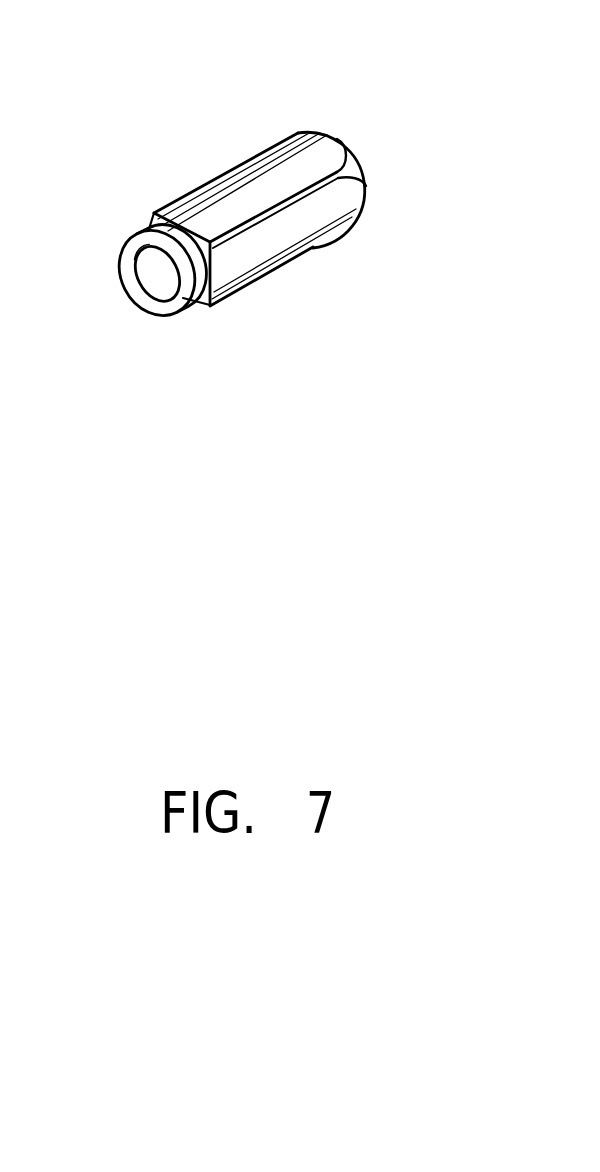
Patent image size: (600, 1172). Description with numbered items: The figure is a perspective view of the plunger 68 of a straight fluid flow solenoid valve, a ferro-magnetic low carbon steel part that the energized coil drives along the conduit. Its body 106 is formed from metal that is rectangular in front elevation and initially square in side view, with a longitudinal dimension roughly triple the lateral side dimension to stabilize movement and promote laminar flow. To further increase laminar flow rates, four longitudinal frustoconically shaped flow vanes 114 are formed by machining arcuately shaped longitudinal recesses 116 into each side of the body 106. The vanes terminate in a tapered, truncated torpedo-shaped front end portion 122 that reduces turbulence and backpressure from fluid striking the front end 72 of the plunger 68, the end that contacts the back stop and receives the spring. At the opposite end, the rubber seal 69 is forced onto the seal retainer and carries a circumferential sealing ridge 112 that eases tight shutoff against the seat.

The plunger 68 is at (157, 178).
The seal 69 is at (152, 233).
The front end 72 is at (375, 182).
The body 106 is at (213, 320).
The sealing ridge 112 is at (138, 295).
The flow vanes 114 is at (210, 177).
The longitudinal recesses 116 is at (263, 177).
The front end portion 122 is at (348, 158).